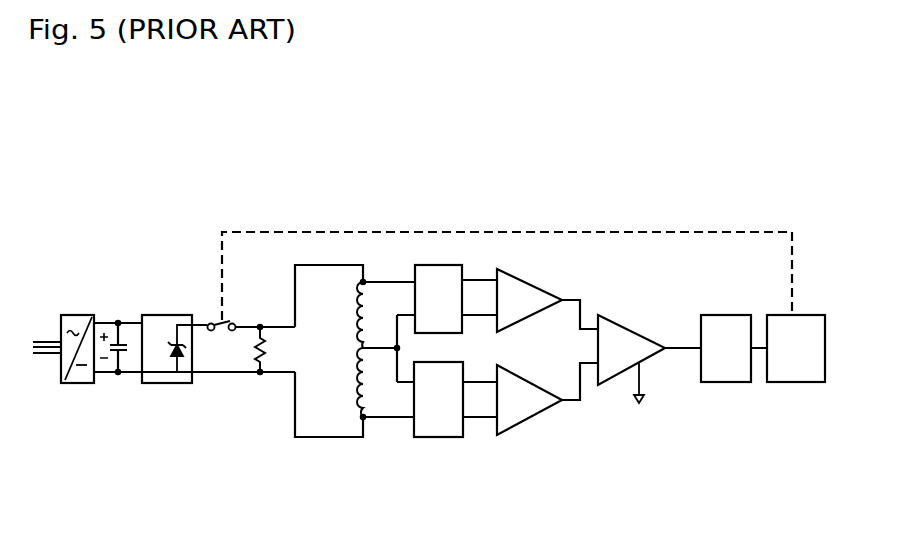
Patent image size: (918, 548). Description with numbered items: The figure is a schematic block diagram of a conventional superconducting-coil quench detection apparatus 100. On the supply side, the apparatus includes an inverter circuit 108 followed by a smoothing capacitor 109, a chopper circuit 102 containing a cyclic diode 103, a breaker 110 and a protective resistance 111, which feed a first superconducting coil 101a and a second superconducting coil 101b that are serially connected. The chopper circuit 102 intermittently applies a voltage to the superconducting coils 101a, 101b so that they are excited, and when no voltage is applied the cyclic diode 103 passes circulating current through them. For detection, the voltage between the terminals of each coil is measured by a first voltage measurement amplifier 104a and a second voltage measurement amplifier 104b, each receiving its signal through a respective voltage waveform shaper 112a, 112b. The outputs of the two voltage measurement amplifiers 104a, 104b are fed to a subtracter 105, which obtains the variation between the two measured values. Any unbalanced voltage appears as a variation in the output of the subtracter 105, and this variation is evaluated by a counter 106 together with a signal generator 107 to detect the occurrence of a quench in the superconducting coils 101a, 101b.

The superconducting-coil quench detection apparatus 100 is at (281, 173).
The first superconducting coil 101a is at (358, 320).
The second superconducting coil 101b is at (358, 384).
The chopper circuit 102 is at (170, 314).
The cyclic diode 103 is at (170, 352).
The first voltage measurement amplifier 104a is at (531, 280).
The second voltage measurement amplifier 104b is at (534, 418).
The subtracter 105 is at (632, 329).
The counter 106 is at (726, 315).
The signal generator 107 is at (809, 315).
The inverter circuit 108 is at (80, 313).
The smoothing capacitor 109 is at (127, 340).
The breaker 110 is at (228, 320).
The protective resistance 111 is at (252, 368).
The voltage waveform shaper 112a is at (437, 265).
The voltage waveform shaper 112b is at (437, 440).